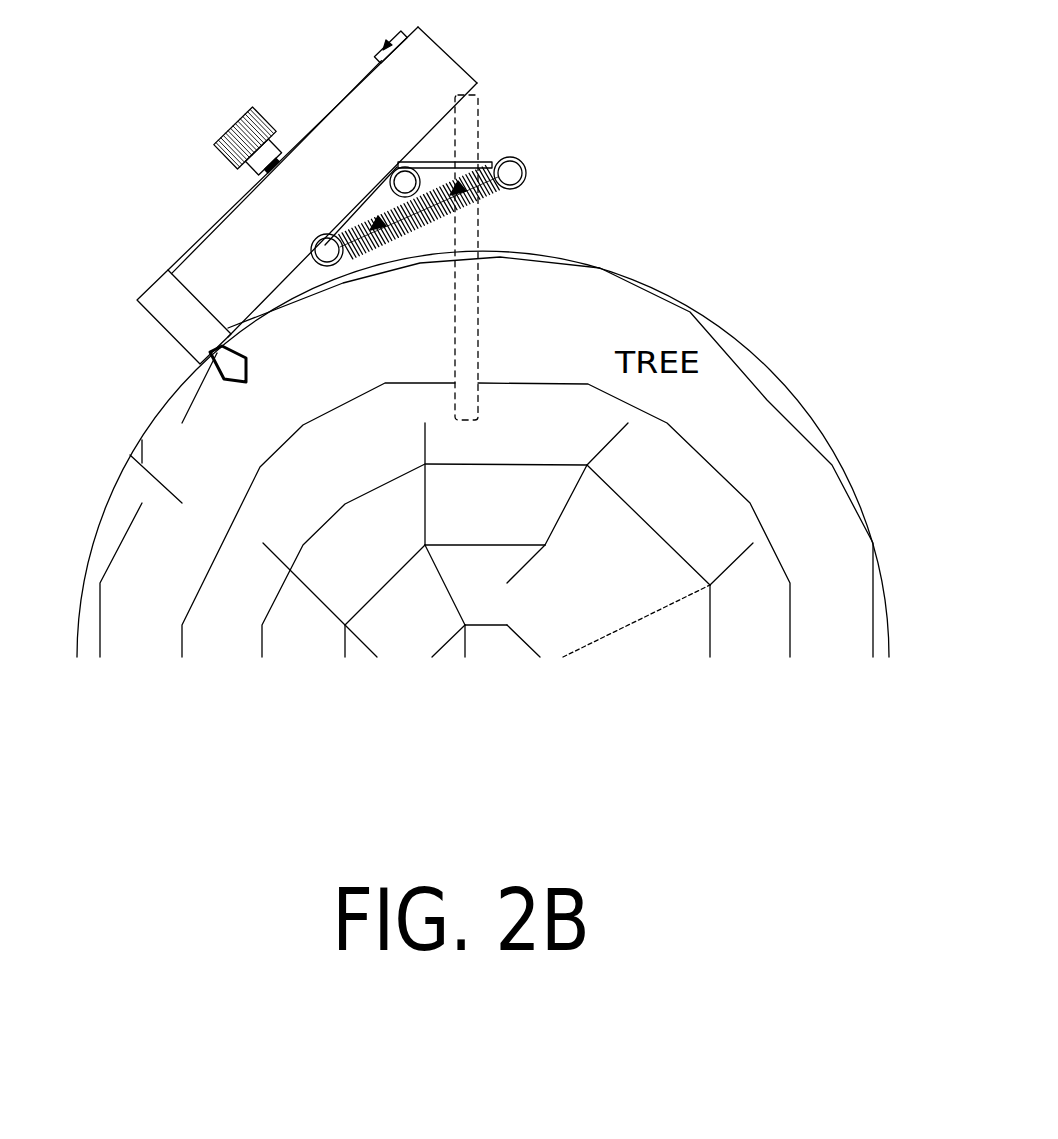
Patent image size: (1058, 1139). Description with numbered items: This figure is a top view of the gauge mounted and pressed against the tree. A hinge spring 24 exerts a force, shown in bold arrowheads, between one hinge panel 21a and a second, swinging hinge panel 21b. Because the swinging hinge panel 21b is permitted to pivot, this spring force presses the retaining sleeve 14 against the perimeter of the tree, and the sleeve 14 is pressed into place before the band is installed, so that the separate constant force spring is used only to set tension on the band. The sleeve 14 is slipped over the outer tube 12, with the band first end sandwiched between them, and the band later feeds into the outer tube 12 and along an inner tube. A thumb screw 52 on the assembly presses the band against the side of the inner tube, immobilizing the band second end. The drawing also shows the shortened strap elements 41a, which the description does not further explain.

The outer tube 12 is at (301, 182).
The retaining sleeve 14 is at (169, 326).
The hinge panel 21a is at (495, 160).
The hinge panel 21b is at (337, 216).
The hinge spring 24 is at (459, 212).
The strap (41a,b shortened) 41a is at (622, 248).
The thumb screw 52 is at (228, 132).